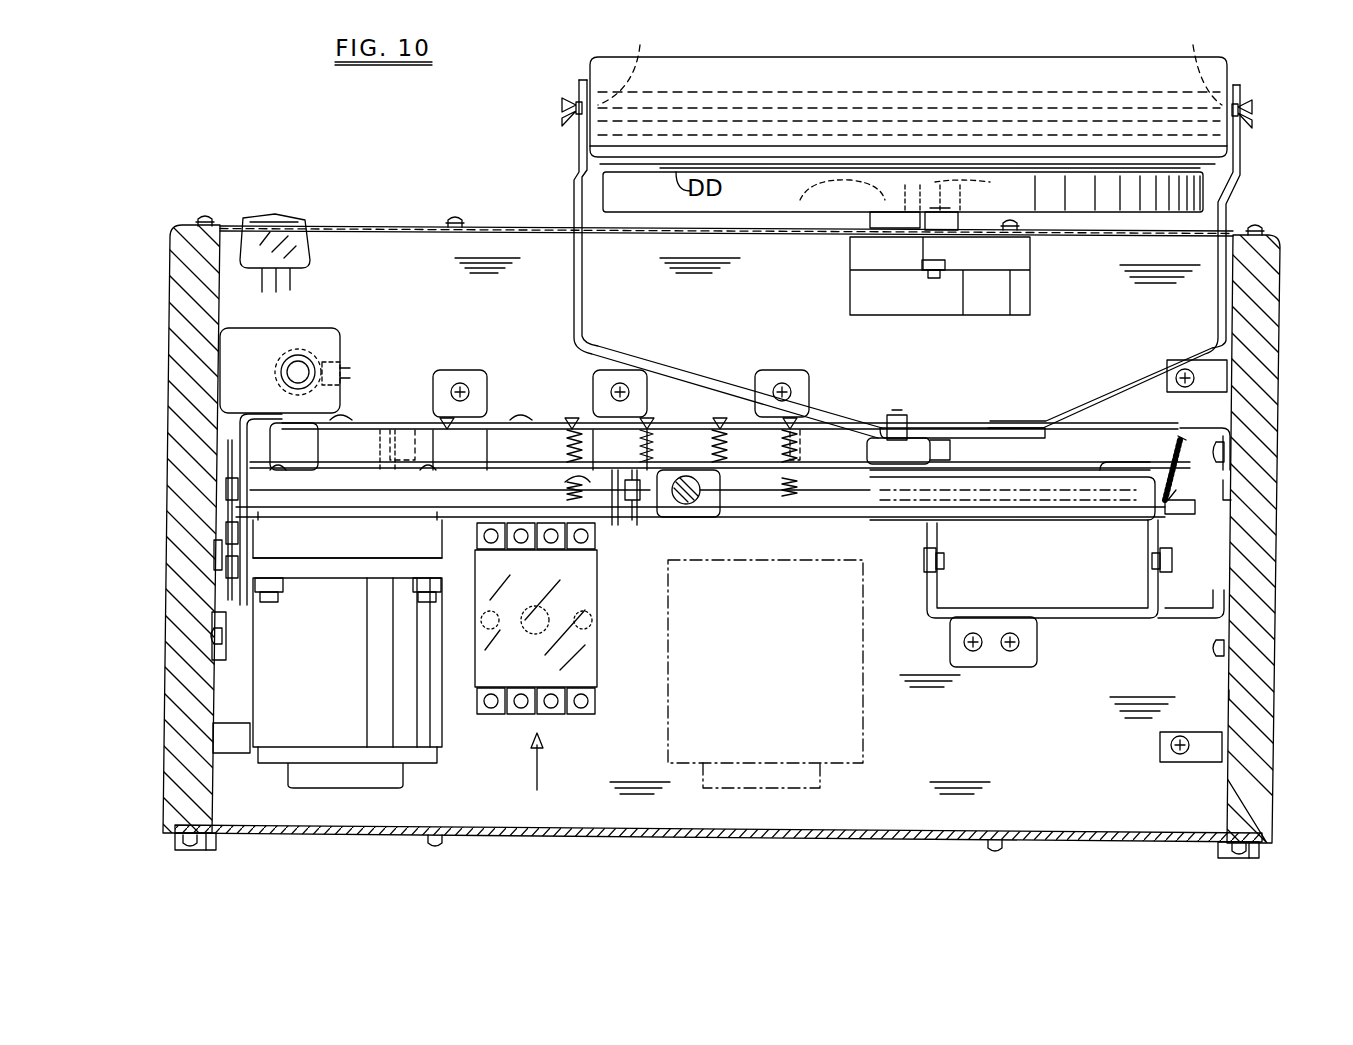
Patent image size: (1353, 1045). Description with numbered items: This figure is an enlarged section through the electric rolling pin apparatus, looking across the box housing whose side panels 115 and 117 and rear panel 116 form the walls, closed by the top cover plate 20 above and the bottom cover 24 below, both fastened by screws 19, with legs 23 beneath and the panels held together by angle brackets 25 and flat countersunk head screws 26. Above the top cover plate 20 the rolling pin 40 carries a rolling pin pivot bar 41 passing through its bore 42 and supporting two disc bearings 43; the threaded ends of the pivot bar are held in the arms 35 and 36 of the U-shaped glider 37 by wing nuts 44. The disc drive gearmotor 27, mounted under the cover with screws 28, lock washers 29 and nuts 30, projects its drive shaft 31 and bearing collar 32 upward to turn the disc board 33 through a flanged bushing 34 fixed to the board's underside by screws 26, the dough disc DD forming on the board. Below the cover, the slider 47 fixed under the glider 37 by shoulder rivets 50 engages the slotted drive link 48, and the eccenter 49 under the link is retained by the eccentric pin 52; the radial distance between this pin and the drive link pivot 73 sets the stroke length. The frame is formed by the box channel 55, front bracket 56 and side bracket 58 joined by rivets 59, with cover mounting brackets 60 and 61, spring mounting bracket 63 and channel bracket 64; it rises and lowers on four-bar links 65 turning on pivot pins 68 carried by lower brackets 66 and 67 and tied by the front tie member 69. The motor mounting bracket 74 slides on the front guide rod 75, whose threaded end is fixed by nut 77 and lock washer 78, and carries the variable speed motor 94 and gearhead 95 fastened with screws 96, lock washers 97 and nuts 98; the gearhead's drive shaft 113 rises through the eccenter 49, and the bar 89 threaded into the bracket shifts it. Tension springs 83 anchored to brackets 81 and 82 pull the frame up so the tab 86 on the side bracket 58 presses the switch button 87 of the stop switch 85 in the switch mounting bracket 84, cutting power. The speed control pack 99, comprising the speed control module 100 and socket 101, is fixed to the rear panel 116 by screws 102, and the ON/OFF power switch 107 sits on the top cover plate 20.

The screws 19 is at (207, 216).
The top cover plate 20 is at (355, 227).
The legs 23 is at (177, 842).
The bottom cover 24 is at (1075, 833).
The angle brackets 25 is at (1240, 364).
The flat countersunk head screws 26 is at (1170, 746).
The disc drive gearmotor 27 is at (1032, 296).
The screws 28 is at (938, 232).
The lock washers 29 is at (925, 265).
The nuts 30 is at (928, 276).
The drive shaft 31 is at (827, 186).
The bearing collar 32 is at (888, 222).
The disc board 33 is at (605, 194).
The flanged bushing 34 is at (1100, 192).
The glider arm 35 is at (578, 152).
The glider arm 36 is at (1242, 162).
The glider 37 is at (1105, 392).
The rolling pin 40 is at (1118, 62).
The rolling pin pivot bar 41 is at (918, 110).
The bore 42 is at (1010, 110).
The disc bearings 43 is at (910, 72).
The wing nuts 44 is at (562, 97).
The slider 47 is at (930, 440).
The drive link 48 is at (992, 430).
The eccenter 49 is at (433, 424).
The shoulder rivets 50 is at (902, 420).
The eccentric pin 52 is at (382, 424).
The box channel 55 is at (932, 450).
The front bracket 56 is at (1045, 470).
The side bracket 58 is at (238, 442).
The rivets 59 is at (292, 424).
The cover mounting bracket 60 is at (632, 502).
The cover mounting bracket 61 is at (1105, 466).
The spring mounting bracket 63 is at (516, 449).
The channel bracket 64 is at (868, 525).
The four-bar links 65 is at (226, 534).
The right lower bracket 66 is at (1098, 620).
The left lower bracket 67 is at (220, 652).
The pivot pins 68 is at (226, 489).
The front tie member 69 is at (1035, 512).
The drive link pivot 73 is at (294, 446).
The motor mounting bracket 74 is at (733, 500).
The front guide rod 75 is at (1184, 512).
The nut 77 is at (617, 520).
The lock washer 78 is at (637, 530).
The bracket 81 is at (642, 373).
The bracket 82 is at (1250, 410).
The tension springs 83 is at (568, 418).
The switch mounting bracket 84 is at (310, 330).
The push button stop switch 85 is at (342, 354).
The tab 86 is at (230, 452).
The switch button 87 is at (296, 372).
The bar 89 is at (688, 496).
The variable speed motor 94 is at (440, 740).
The gearhead 95 is at (347, 539).
The screws 96 is at (410, 470).
The lock washers 97 is at (413, 586).
The nuts 98 is at (418, 602).
The speed control pack 99 is at (552, 762).
The electronic speed control module 100 is at (598, 658).
The socket 101 is at (577, 712).
The screws 102 is at (536, 606).
The ON/OFF power switch 107 is at (268, 215).
The drive shaft 113 is at (380, 460).
The side panel 115 is at (1258, 562).
The rear panel 116 is at (1248, 690).
The side panel 117 is at (178, 302).